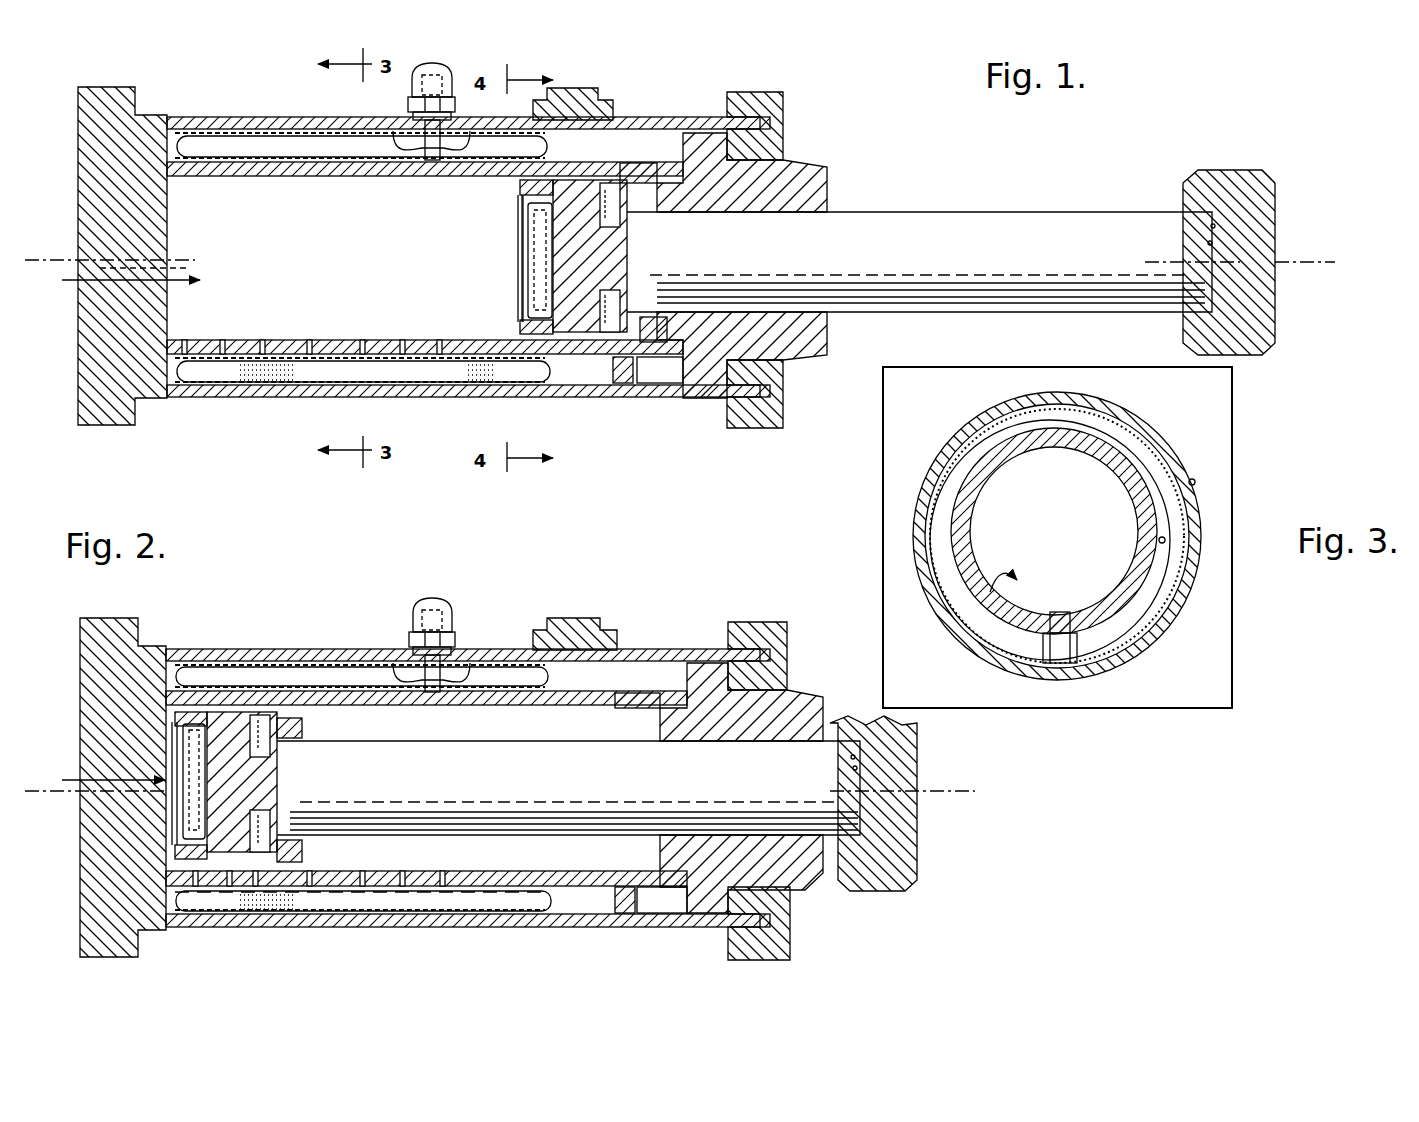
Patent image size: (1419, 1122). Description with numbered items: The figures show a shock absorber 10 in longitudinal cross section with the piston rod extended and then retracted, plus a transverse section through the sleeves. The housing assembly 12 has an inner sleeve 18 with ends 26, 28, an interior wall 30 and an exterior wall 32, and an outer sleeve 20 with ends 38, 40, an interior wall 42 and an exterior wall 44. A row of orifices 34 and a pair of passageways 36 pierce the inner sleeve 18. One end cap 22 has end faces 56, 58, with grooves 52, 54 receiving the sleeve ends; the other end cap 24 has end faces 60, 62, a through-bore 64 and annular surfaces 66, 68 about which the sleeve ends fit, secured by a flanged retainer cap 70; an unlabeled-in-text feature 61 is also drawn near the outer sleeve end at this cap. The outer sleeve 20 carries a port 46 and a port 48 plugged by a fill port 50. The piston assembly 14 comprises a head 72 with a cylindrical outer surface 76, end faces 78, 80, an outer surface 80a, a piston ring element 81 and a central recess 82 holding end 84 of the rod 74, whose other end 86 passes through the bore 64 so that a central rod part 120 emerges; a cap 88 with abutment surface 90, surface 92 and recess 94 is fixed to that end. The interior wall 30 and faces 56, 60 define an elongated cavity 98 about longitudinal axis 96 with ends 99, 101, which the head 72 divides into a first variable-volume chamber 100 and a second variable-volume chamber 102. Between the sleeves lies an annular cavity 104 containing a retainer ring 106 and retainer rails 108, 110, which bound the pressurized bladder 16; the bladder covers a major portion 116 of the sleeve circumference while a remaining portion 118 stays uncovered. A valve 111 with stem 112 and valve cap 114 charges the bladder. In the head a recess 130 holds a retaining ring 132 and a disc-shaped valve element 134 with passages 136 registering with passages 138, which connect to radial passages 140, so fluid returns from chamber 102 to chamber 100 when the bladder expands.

In FIG. 1, the shock absorber 10 is at (812, 100).
In FIG. 2, the shock absorber 10 is at (780, 590).
In FIG. 1, the housing assembly 12 is at (825, 170).
In FIG. 2, the housing assembly 12 is at (818, 698).
In FIG. 1, the piston assembly 14 is at (1060, 212).
In FIG. 2, the piston assembly 14 is at (832, 845).
In FIG. 1, the pressurized bladder 16 is at (400, 150).
In FIG. 2, the pressurized bladder 16 is at (305, 678).
In FIG. 3, the pressurized bladder 16 is at (1195, 480).
In FIG. 1, the inner sleeve 18 is at (460, 176).
In FIG. 2, the inner sleeve 18 is at (190, 691).
In FIG. 3, the inner sleeve 18 is at (1090, 455).
In FIG. 1, the outer sleeve 20 is at (700, 117).
In FIG. 2, the outer sleeve 20 is at (695, 649).
In FIG. 3, the outer sleeve 20 is at (1150, 420).
In FIG. 1, the end cap 22 is at (78, 312).
In FIG. 2, the end cap 22 is at (80, 848).
In FIG. 3, the end cap 22 is at (1232, 690).
In FIG. 1, the end cap 24 is at (828, 325).
In FIG. 2, the end cap 24 is at (805, 890).
In FIG. 1, the inner sleeve end 26 is at (160, 163).
In FIG. 2, the inner sleeve end 26 is at (166, 700).
In FIG. 1, the inner sleeve end 28 is at (710, 178).
In FIG. 2, the inner sleeve end 28 is at (705, 700).
In FIG. 1, the interior wall 30 is at (290, 178).
In FIG. 2, the interior wall 30 is at (395, 706).
In FIG. 3, the interior wall 30 is at (985, 490).
In FIG. 1, the exterior wall 32 is at (278, 133).
In FIG. 2, the exterior wall 32 is at (228, 688).
In FIG. 3, the exterior wall 32 is at (935, 480).
In FIG. 1, the orifices 34 is at (215, 342).
In FIG. 3, the orifices 34 is at (1060, 612).
In FIG. 1, the passageways 36 is at (638, 165).
In FIG. 2, the passageways 36 is at (615, 708).
In FIG. 1, the outer sleeve end 38 is at (165, 117).
In FIG. 2, the outer sleeve end 38 is at (80, 648).
In FIG. 1, the outer sleeve end 40 is at (783, 123).
In FIG. 2, the outer sleeve end 40 is at (787, 655).
In FIG. 1, the interior wall 42 is at (222, 138).
In FIG. 2, the interior wall 42 is at (640, 662).
In FIG. 1, the exterior wall 44 is at (250, 117).
In FIG. 2, the exterior wall 44 is at (660, 649).
In FIG. 1, the port 46 is at (437, 160).
In FIG. 2, the port 46 is at (445, 655).
In FIG. 1, the port 48 is at (595, 129).
In FIG. 2, the port 48 is at (590, 661).
In FIG. 1, the fill port 50 is at (600, 88).
In FIG. 2, the fill port 50 is at (602, 618).
In FIG. 1, the groove 52 is at (172, 125).
In FIG. 2, the groove 52 is at (170, 648).
In FIG. 1, the groove 54 is at (172, 175).
In FIG. 2, the groove 54 is at (170, 700).
In FIG. 1, the end face 56 is at (168, 230).
In FIG. 2, the end face 56 is at (172, 712).
In FIG. 3, the end face 56 is at (1033, 537).
In FIG. 1, the end face 58 is at (80, 210).
In FIG. 2, the end face 58 is at (80, 750).
In FIG. 1, the end face 60 is at (658, 215).
In FIG. 2, the end face 60 is at (662, 742).
In FIG. 1, the shoulder 61 is at (678, 127).
In FIG. 2, the shoulder 61 is at (680, 680).
In FIG. 1, the end face 62 is at (827, 190).
In FIG. 2, the end face 62 is at (825, 860).
In FIG. 1, the through-bore 64 is at (745, 213).
In FIG. 2, the through-bore 64 is at (720, 742).
In FIG. 1, the annular surface 66 is at (683, 195).
In FIG. 2, the annular surface 66 is at (680, 725).
In FIG. 1, the annular surface 68 is at (730, 105).
In FIG. 2, the annular surface 68 is at (735, 668).
In FIG. 1, the retainer cap 70 is at (770, 428).
In FIG. 2, the retainer cap 70 is at (760, 622).
In FIG. 1, the head 72 is at (590, 256).
In FIG. 2, the head 72 is at (242, 782).
In FIG. 1, the rod 74 is at (990, 212).
In FIG. 2, the rod 74 is at (790, 725).
In FIG. 1, the cylindrical outer surface 76 is at (568, 168).
In FIG. 2, the cylindrical outer surface 76 is at (240, 691).
In FIG. 1, the end face 78 is at (520, 330).
In FIG. 2, the end face 78 is at (175, 850).
In FIG. 1, the end face 80 is at (667, 322).
In FIG. 2, the end face 80 is at (302, 722).
In FIG. 1, the outer surface 80a is at (667, 338).
In FIG. 2, the outer surface 80a is at (302, 860).
In FIG. 1, the piston ring element 81 is at (547, 147).
In FIG. 2, the piston ring element 81 is at (215, 675).
In FIG. 1, the central recess 82 is at (645, 240).
In FIG. 2, the central recess 82 is at (280, 755).
In FIG. 1, the rod end 84 is at (628, 262).
In FIG. 2, the rod end 84 is at (280, 780).
In FIG. 1, the rod end 86 is at (1210, 226).
In FIG. 2, the rod end 86 is at (850, 757).
In FIG. 1, the cap 88 is at (1225, 170).
In FIG. 2, the cap 88 is at (900, 890).
In FIG. 1, the abutment surface 90 is at (1276, 320).
In FIG. 1, the surface 92 is at (1190, 318).
In FIG. 2, the surface 92 is at (828, 715).
In FIG. 1, the circular recess 94 is at (1212, 243).
In FIG. 2, the circular recess 94 is at (858, 768).
In FIG. 1, the longitudinal axis 96 is at (80, 258).
In FIG. 2, the longitudinal axis 96 is at (70, 791).
In FIG. 1, the elongated cavity 98 is at (119, 280).
In FIG. 2, the elongated cavity 98 is at (102, 772).
In FIG. 3, the elongated cavity 98 is at (975, 600).
In FIG. 1, the cavity end 99 is at (683, 155).
In FIG. 2, the cavity end 99 is at (680, 900).
In FIG. 1, the first variable-volume chamber 100 is at (308, 231).
In FIG. 1, the cavity end 101 is at (161, 250).
In FIG. 2, the cavity end 101 is at (170, 862).
In FIG. 1, the second variable-volume chamber 102 is at (633, 383).
In FIG. 2, the second variable-volume chamber 102 is at (555, 720).
In FIG. 1, the annular cavity 104 is at (660, 370).
In FIG. 2, the annular cavity 104 is at (635, 899).
In FIG. 1, the retainer ring 106 is at (540, 390).
In FIG. 2, the retainer ring 106 is at (570, 915).
In FIG. 1, the retainer rail 108 is at (440, 375).
In FIG. 2, the retainer rail 108 is at (420, 905).
In FIG. 3, the retainer rail 108 is at (1040, 660).
In FIG. 3, the retainer rail 110 is at (1075, 663).
In FIG. 1, the valve 111 is at (455, 75).
In FIG. 2, the valve 111 is at (432, 595).
In FIG. 1, the stem 112 is at (408, 118).
In FIG. 2, the stem 112 is at (410, 645).
In FIG. 1, the valve cap 114 is at (438, 68).
In FIG. 2, the valve cap 114 is at (448, 600).
In FIG. 3, the major portion 116 is at (1159, 540).
In FIG. 3, the remaining portion 118 is at (1050, 625).
In FIG. 1, the central rod part 120 is at (920, 212).
In FIG. 2, the central rod part 120 is at (770, 742).
In FIG. 1, the circular recess 130 is at (522, 189).
In FIG. 2, the circular recess 130 is at (175, 735).
In FIG. 1, the retaining ring 132 is at (518, 210).
In FIG. 2, the retaining ring 132 is at (172, 735).
In FIG. 1, the valve element 134 is at (530, 250).
In FIG. 2, the valve element 134 is at (190, 775).
In FIG. 1, the passages 136 is at (523, 228).
In FIG. 2, the passages 136 is at (177, 755).
In FIG. 1, the passages 138 is at (590, 215).
In FIG. 2, the passages 138 is at (225, 745).
In FIG. 1, the passages 140 is at (620, 205).
In FIG. 2, the passages 140 is at (270, 730).